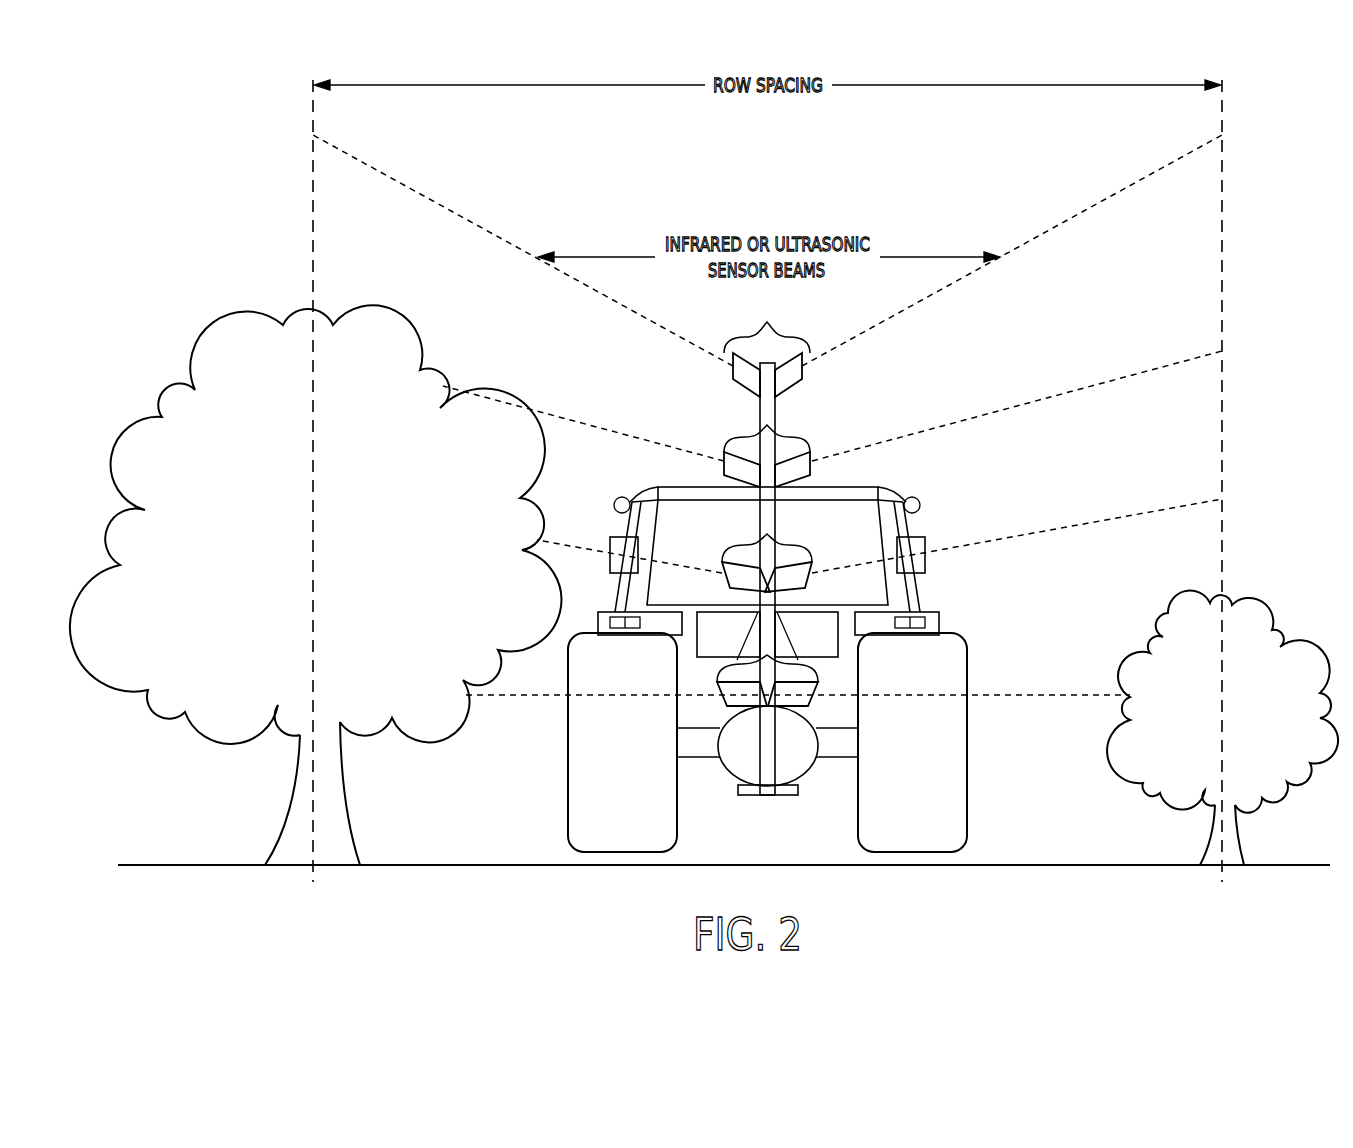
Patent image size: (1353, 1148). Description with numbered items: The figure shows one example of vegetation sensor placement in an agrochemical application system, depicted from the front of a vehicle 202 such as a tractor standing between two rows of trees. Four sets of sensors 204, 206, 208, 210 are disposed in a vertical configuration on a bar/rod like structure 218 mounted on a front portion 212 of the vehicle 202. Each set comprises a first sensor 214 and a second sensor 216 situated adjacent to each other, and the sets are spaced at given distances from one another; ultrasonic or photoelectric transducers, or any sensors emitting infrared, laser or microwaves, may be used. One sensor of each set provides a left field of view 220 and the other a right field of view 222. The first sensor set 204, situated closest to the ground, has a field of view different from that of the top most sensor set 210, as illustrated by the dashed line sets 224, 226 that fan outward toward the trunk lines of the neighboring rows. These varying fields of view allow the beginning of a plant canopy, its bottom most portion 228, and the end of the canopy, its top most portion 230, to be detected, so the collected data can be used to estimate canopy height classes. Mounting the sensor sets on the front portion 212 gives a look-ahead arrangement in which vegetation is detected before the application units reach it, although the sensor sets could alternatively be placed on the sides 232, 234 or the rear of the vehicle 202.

The vehicle 202 is at (926, 623).
The first sensor set 204 is at (792, 658).
The sensor set 206 is at (786, 544).
The sensor set 208 is at (783, 432).
The top most sensor set 210 is at (769, 346).
The front portion 212 is at (782, 736).
The first sensor 214 is at (733, 372).
The second sensor 216 is at (803, 372).
The bar/rod like structure 218 is at (718, 735).
The left field of view 220 is at (1122, 546).
The right field of view 222 is at (366, 270).
The dashed line set 224 is at (1037, 698).
The dashed line set 226 is at (445, 208).
The bottom most portion 228 is at (438, 676).
The top most portion 230 is at (436, 388).
The side 232 is at (924, 540).
The side 234 is at (611, 540).